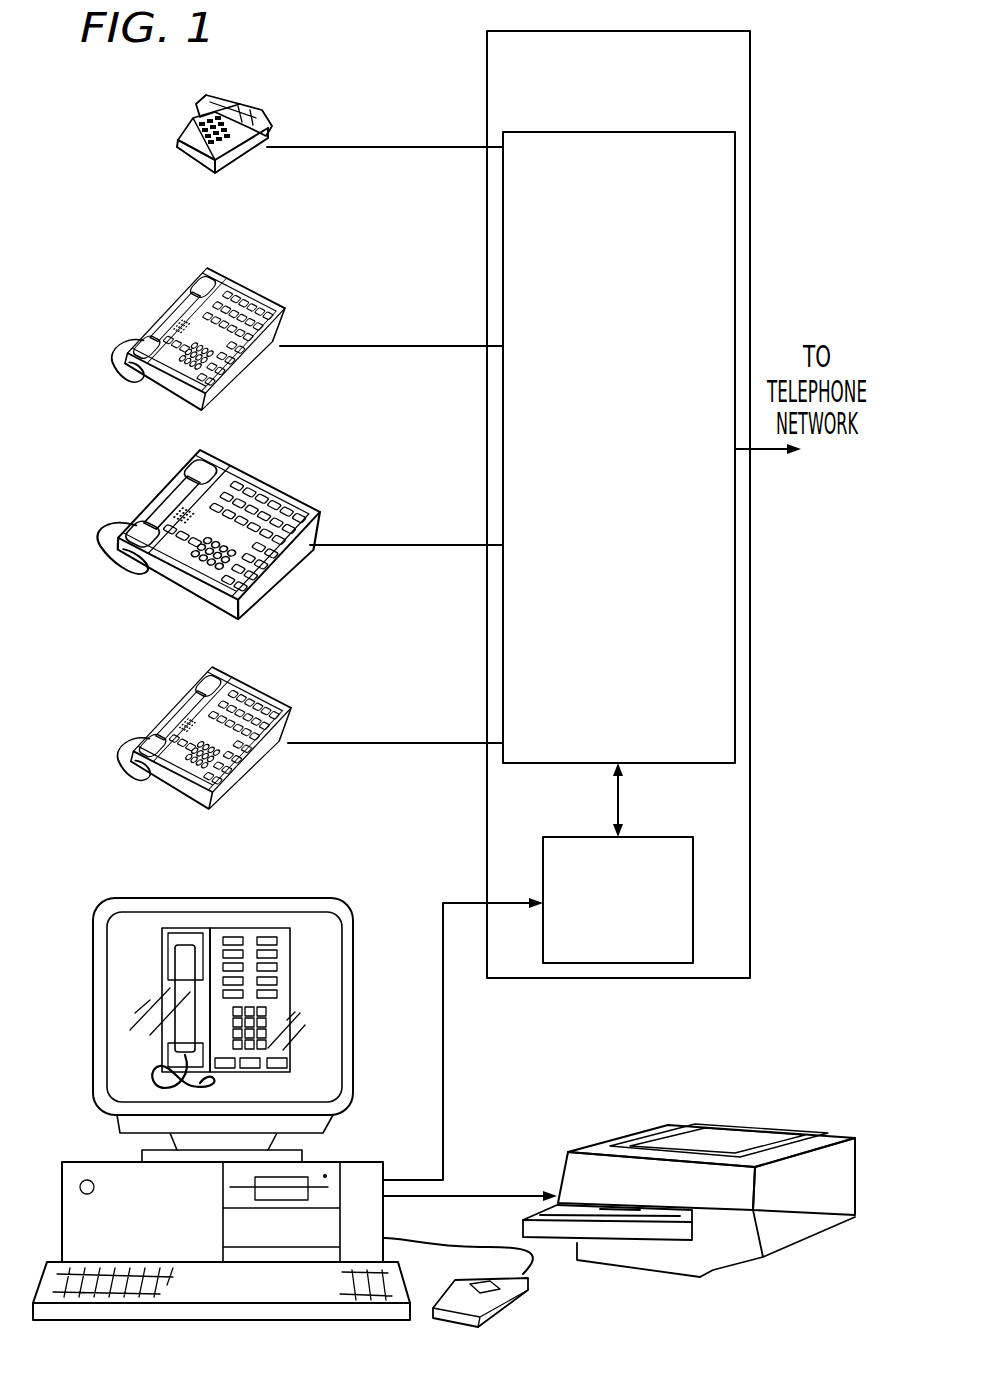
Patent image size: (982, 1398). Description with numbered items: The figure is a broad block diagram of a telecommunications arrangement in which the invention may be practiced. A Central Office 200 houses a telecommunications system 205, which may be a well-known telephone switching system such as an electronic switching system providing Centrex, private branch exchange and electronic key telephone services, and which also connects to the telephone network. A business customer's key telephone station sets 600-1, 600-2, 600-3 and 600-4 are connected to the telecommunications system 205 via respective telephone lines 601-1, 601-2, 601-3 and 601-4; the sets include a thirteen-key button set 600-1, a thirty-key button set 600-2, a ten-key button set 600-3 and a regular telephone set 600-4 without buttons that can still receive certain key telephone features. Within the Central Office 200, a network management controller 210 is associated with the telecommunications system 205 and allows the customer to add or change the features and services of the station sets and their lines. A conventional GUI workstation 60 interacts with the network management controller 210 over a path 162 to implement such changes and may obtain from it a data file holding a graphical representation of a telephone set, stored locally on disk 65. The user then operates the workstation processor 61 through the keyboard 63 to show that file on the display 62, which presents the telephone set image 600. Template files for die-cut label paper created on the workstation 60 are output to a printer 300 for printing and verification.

The Central Office 200 is at (751, 67).
The telecommunications system 205 is at (736, 166).
The network management controller 210 is at (657, 837).
The path 162 is at (443, 1042).
The key telephone station set 600-1 is at (268, 693).
The key telephone station set 600-2 is at (272, 490).
The key telephone station set 600-3 is at (267, 293).
The regular telephone set 600-4 is at (248, 97).
The telephone line 601-1 is at (373, 743).
The telephone line 601-2 is at (373, 545).
The telephone line 601-3 is at (373, 346).
The telephone line 601-4 is at (373, 147).
The GUI workstation 60 is at (284, 880).
The workstation processor 61 is at (88, 1162).
The display 62 is at (340, 900).
The keyboard 63 is at (53, 1275).
The disk 65 is at (330, 1190).
The telephone set representation 600 is at (200, 928).
The printer 300 is at (732, 1122).